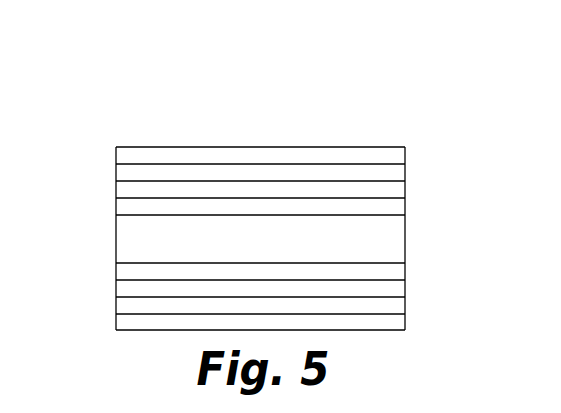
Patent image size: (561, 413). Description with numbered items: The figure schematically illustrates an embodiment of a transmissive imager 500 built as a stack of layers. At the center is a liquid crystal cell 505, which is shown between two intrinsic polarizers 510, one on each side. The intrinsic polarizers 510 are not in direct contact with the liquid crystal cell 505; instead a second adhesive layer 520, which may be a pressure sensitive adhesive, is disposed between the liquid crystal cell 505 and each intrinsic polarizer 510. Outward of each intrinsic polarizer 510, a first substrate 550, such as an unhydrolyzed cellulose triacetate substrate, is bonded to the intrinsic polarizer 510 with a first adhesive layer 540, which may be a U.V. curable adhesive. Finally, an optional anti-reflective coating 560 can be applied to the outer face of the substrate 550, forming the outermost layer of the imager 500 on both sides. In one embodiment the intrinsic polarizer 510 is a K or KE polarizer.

The transmissive imager 500 is at (402, 105).
The liquid crystal cell 505 is at (395, 250).
The intrinsic polarizer 510 is at (397, 191).
The second adhesive layer 520 is at (397, 209).
The first adhesive layer 540 is at (397, 173).
The first substrate 550 is at (397, 157).
The anti-reflective coating 560 is at (328, 147).